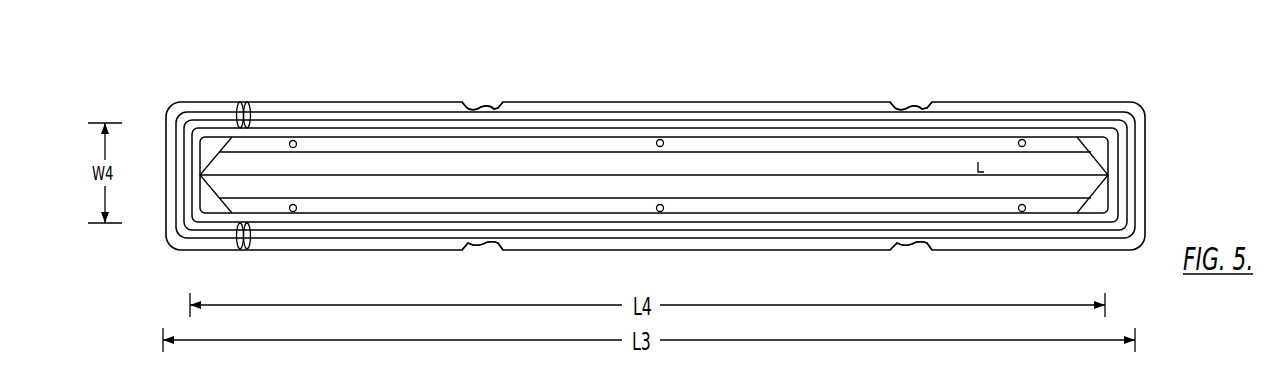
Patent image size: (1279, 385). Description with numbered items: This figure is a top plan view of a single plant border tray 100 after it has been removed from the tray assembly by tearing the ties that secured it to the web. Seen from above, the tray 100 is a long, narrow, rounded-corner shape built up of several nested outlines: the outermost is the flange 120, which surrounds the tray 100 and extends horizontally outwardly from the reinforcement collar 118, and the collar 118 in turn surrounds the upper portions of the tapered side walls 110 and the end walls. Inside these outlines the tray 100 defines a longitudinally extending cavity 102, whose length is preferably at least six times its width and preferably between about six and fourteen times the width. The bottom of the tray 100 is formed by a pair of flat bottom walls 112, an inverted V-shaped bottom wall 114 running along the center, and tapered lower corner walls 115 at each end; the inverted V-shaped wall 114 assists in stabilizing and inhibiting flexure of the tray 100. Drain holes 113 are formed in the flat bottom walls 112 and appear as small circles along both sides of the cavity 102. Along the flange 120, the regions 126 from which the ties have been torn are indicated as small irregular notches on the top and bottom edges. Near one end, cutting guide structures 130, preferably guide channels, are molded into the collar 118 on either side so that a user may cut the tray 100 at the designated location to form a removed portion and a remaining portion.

The tray 100 is at (969, 65).
The cavity 102 is at (790, 145).
The side walls 110 is at (660, 130).
The flat bottom walls 112 is at (755, 145).
The drain holes 113 is at (300, 142).
The inverted V-shaped bottom wall 114 is at (592, 165).
The tapered lower corner walls 115 is at (208, 143).
The reinforcement collar 118 is at (563, 120).
The flange 120 is at (709, 106).
The torn tie regions 126 is at (483, 105).
The cutting guide structures 130 is at (242, 108).